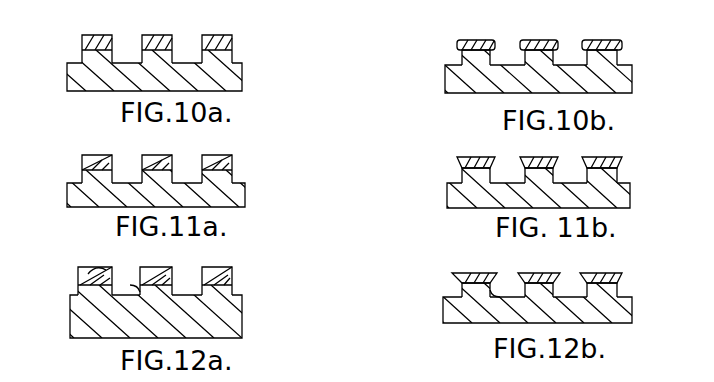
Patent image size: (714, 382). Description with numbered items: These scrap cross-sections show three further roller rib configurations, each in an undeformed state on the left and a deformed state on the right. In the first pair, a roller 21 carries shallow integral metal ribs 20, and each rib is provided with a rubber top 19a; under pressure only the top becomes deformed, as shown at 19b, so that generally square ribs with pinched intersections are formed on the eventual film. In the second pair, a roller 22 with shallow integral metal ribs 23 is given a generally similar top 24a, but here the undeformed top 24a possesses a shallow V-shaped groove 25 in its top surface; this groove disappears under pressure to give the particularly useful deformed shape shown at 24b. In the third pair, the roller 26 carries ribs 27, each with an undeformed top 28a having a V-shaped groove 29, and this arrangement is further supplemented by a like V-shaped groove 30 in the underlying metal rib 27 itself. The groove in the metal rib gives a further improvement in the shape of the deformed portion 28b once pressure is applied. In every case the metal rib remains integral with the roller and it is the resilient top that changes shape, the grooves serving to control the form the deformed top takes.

In FIG. 10a, the rubber top 19a is at (143, 35).
In FIG. 10b, the rubber top 19b is at (527, 42).
In FIG. 10a, the shallow integral metal rib 20 is at (88, 58).
In FIG. 10b, the shallow integral metal rib 20 is at (465, 60).
In FIG. 10a, the roller 21 is at (233, 77).
In FIG. 10b, the roller 21 is at (457, 77).
In FIG. 11a, the roller 22 is at (233, 214).
In FIG. 11b, the roller 22 is at (462, 192).
In FIG. 11a, the shallow integral metal rib 23 is at (220, 175).
In FIG. 11b, the shallow integral metal rib 23 is at (472, 177).
In FIG. 11a, the top 24a is at (82, 165).
In FIG. 11b, the top 24b is at (523, 158).
In FIG. 11a, the V-shaped groove 25 is at (152, 157).
In FIG. 12a, the roller 26 is at (220, 325).
In FIG. 12b, the roller 26 is at (470, 312).
In FIG. 12a, the rib 27 is at (80, 288).
In FIG. 12b, the rib 27 is at (470, 292).
In FIG. 12a, the top 28a is at (85, 277).
In FIG. 12b, the top 28b is at (472, 273).
In FIG. 12a, the V-shaped groove 29 is at (102, 265).
In FIG. 12a, the V-shaped groove 30 is at (147, 288).
In FIG. 12b, the V-shaped groove 30 is at (520, 287).